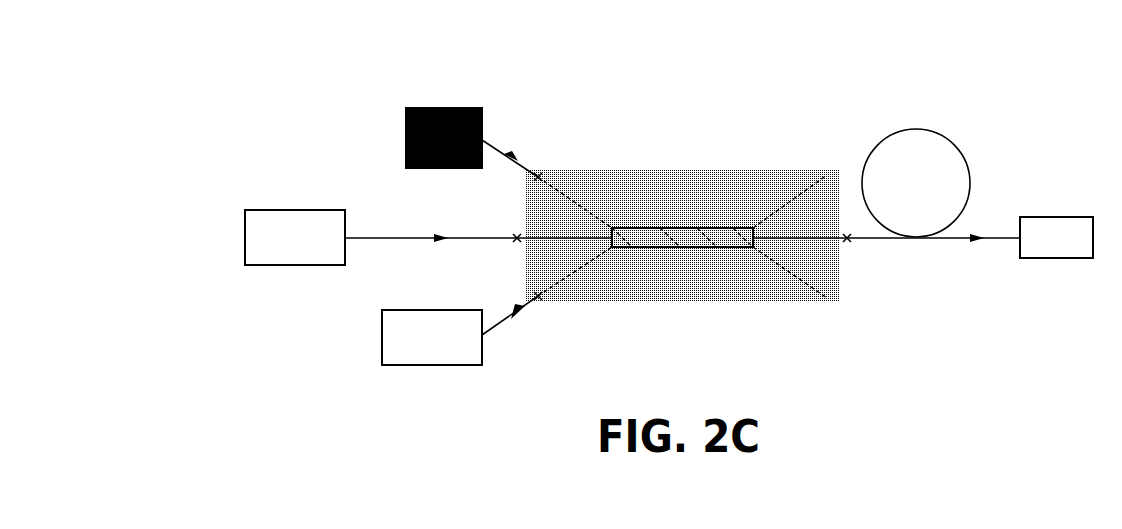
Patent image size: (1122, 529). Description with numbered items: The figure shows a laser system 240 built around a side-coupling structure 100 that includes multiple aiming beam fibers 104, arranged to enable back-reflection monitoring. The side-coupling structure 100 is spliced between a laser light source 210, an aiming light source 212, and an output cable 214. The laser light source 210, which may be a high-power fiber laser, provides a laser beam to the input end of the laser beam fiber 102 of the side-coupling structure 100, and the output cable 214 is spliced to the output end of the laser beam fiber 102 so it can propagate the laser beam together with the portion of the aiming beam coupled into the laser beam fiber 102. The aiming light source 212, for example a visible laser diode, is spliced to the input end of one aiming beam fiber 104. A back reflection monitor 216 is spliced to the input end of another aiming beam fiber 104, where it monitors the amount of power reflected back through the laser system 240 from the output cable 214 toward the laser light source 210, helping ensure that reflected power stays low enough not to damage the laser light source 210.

The laser system 240 is at (163, 63).
The side-coupling structure 100 is at (700, 201).
The laser beam fiber 102 is at (682, 227).
The aiming beam fiber 104 is at (577, 201).
The laser light source 210 is at (315, 249).
The aiming light source 212 is at (452, 349).
The output cable 214 is at (1076, 248).
The back reflection monitor 216 is at (464, 148).